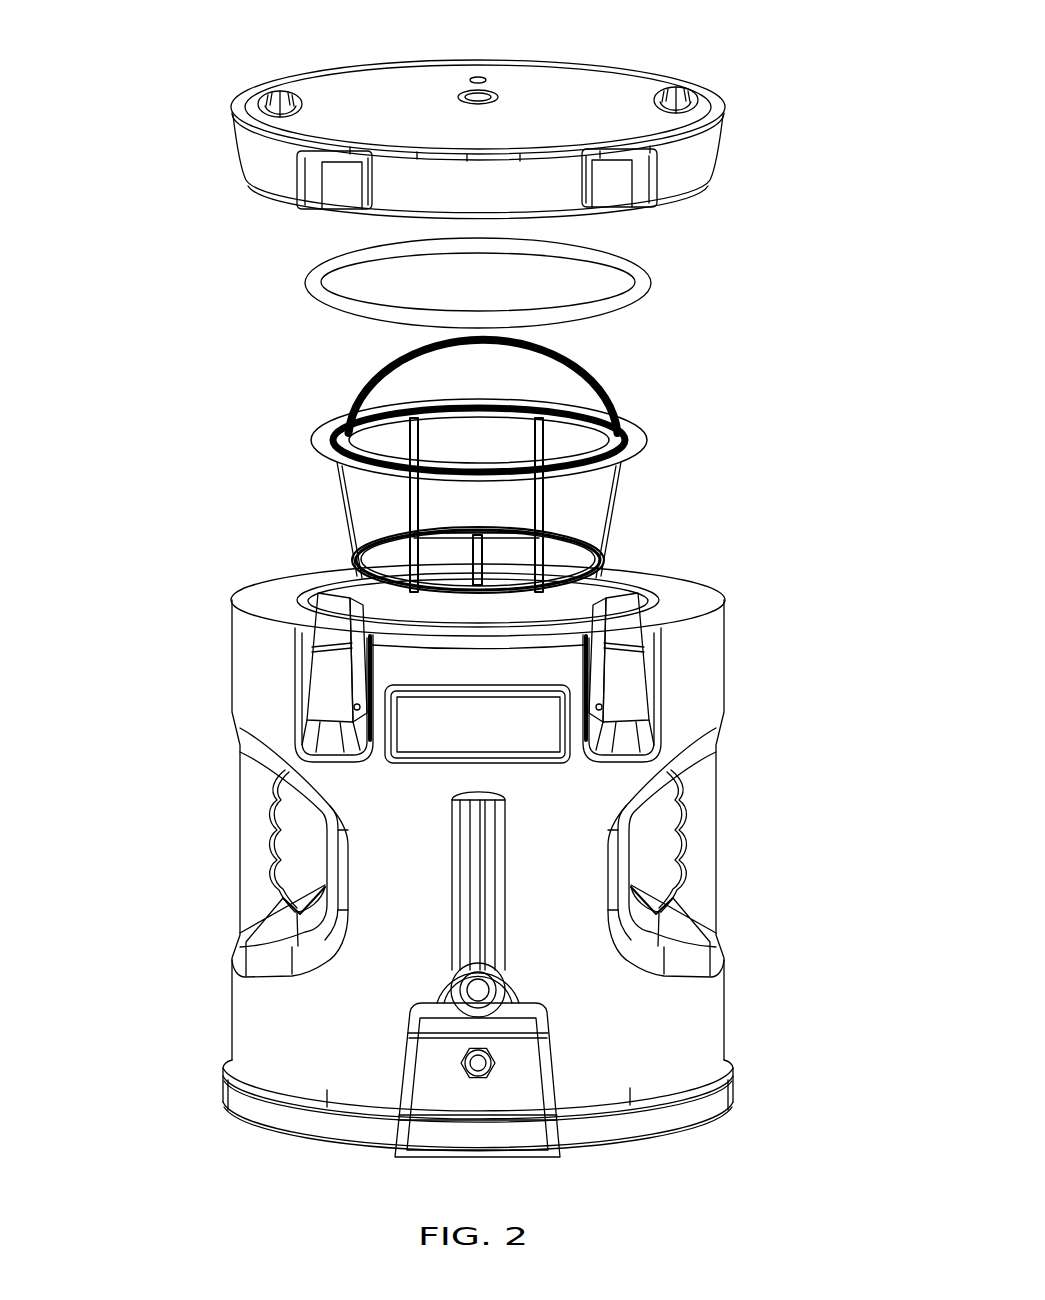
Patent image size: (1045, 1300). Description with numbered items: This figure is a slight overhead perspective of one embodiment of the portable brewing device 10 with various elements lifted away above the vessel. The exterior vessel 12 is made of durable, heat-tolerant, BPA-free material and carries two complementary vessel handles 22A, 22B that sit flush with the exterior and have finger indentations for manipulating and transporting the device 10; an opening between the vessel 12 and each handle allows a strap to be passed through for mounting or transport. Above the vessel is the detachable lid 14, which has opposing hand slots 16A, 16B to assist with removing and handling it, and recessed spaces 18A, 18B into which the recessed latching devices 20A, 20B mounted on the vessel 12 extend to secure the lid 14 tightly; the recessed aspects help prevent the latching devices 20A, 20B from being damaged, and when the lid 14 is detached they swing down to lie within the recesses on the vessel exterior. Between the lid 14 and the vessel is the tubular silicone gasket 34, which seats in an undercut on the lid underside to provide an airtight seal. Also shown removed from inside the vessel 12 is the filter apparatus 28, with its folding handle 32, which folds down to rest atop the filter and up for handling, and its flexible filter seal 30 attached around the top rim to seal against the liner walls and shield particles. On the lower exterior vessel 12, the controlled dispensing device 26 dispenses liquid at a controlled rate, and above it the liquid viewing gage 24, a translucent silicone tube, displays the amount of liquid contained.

The portable brewing device 10 is at (108, 661).
The exterior vessel 12 is at (485, 849).
The detachable lid 14 is at (476, 129).
The hand slot 16A is at (264, 108).
The hand slot 16B is at (692, 104).
The recessed space 18A is at (332, 195).
The recessed space 18B is at (632, 197).
The recessed latching device 20A is at (317, 700).
The recessed latching device 20B is at (638, 688).
The vessel handle 22A is at (245, 906).
The vessel handle 22B is at (717, 905).
The liquid viewing gage 24 is at (482, 947).
The controlled dispensing device 26 is at (473, 1075).
The filter apparatus 28 is at (477, 456).
The filter seal 30 is at (647, 432).
The folding handle 32 is at (604, 376).
The tubular silicone gasket 34 is at (302, 283).